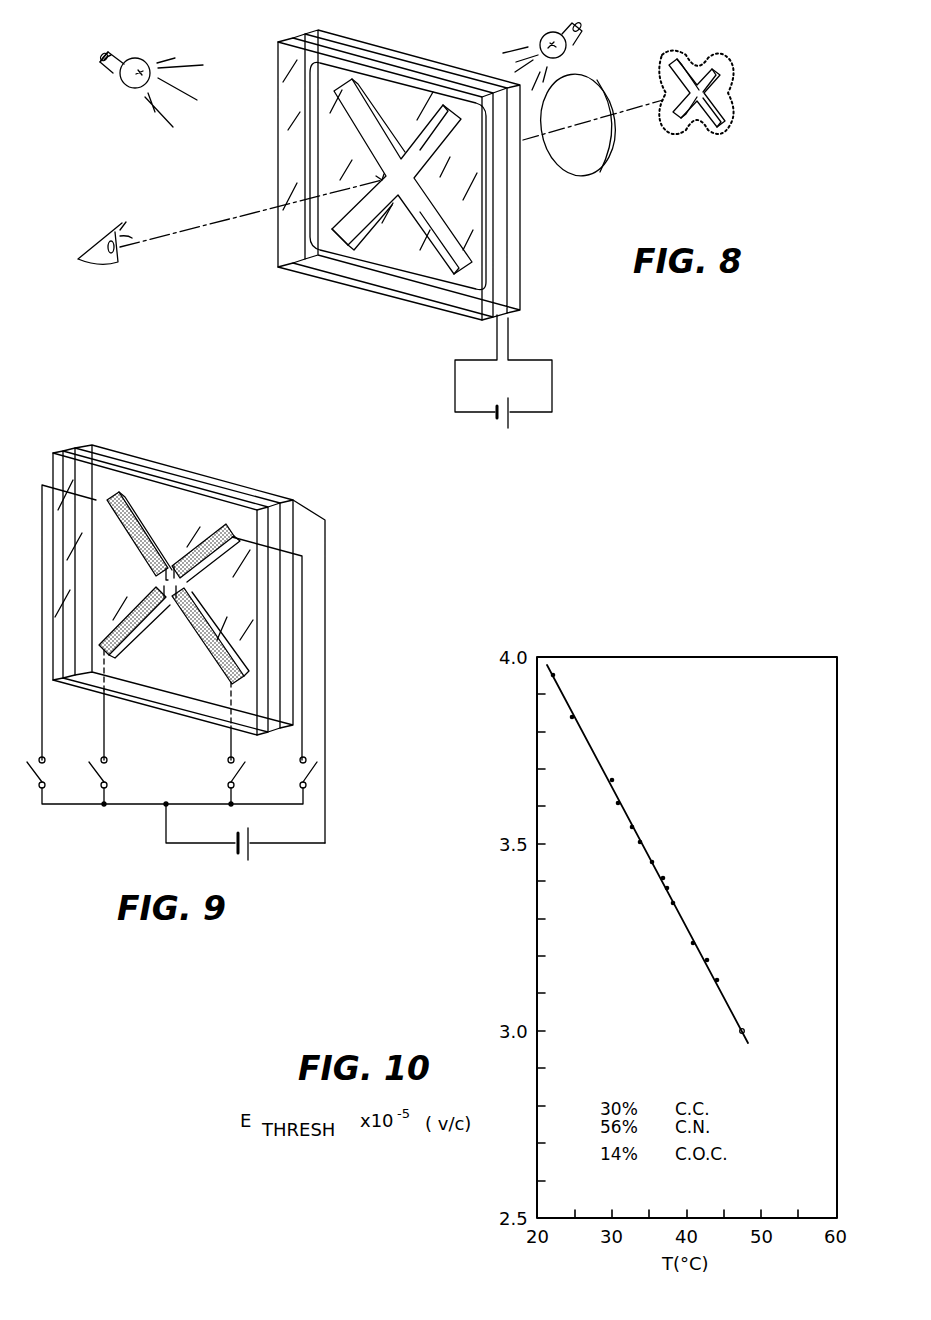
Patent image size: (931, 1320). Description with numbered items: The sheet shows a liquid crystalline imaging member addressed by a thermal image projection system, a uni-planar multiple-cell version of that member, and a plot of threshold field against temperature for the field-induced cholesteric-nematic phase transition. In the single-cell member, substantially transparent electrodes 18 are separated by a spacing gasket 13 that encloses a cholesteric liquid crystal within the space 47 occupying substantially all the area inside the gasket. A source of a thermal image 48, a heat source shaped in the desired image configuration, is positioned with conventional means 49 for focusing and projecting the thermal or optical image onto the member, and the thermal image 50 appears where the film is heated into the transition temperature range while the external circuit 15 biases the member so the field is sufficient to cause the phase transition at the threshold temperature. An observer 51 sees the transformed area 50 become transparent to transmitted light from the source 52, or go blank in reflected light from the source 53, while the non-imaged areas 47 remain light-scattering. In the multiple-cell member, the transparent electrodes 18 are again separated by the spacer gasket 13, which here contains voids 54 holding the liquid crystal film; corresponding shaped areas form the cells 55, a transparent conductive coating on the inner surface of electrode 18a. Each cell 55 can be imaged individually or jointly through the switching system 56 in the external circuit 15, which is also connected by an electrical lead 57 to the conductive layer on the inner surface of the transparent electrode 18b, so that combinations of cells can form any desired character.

In FIG. 8, the spacing gasket 13 is at (382, 60).
In FIG. 9, the spacing gasket 13 is at (87, 450).
In FIG. 8, the external circuit 15 is at (553, 348).
In FIG. 9, the external circuit 15 is at (276, 859).
In FIG. 8, the substantially transparent electrodes 18 is at (287, 46).
In FIG. 9, the electrode 18a is at (58, 448).
In FIG. 9, the substantially transparent electrode 18b is at (152, 462).
In FIG. 8, the space 47 is at (408, 114).
In FIG. 8, the source of a thermal image 48 is at (720, 104).
In FIG. 8, the means for focusing and projecting 49 is at (606, 164).
In FIG. 8, the thermal image 50 is at (340, 243).
In FIG. 8, the observer 51 is at (90, 240).
In FIG. 8, the source 52 is at (567, 46).
In FIG. 8, the source 53 is at (118, 84).
In FIG. 9, the voids 54 is at (213, 527).
In FIG. 9, the cells 55 is at (152, 590).
In FIG. 9, the switching system 56 is at (97, 818).
In FIG. 9, the electrical lead 57 is at (314, 508).